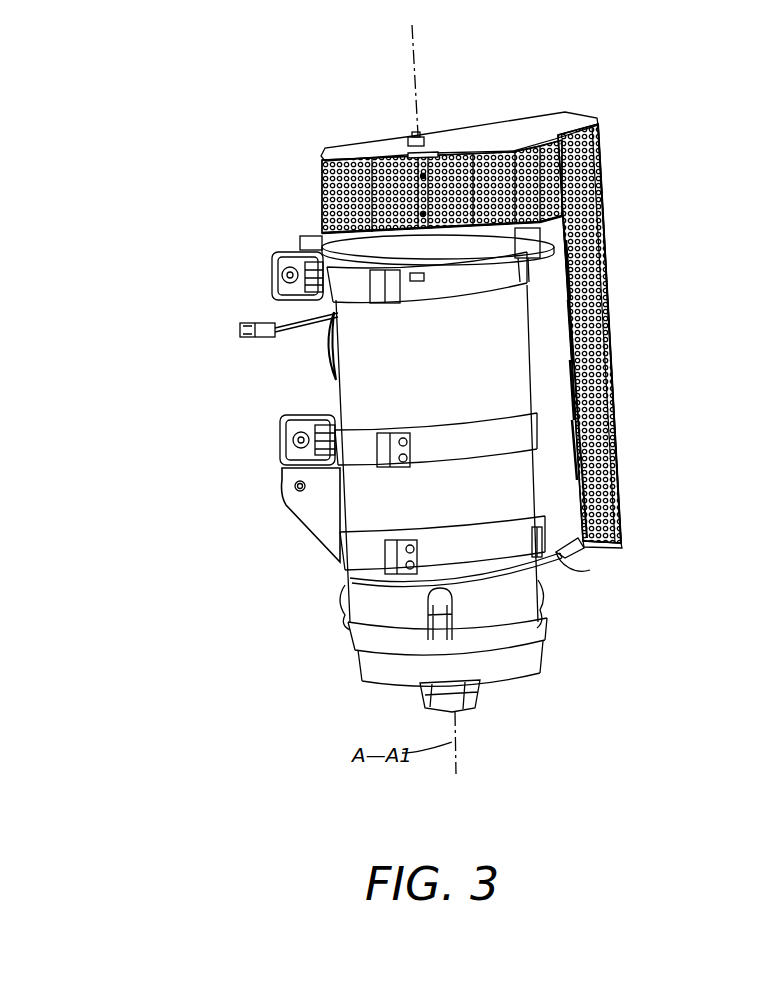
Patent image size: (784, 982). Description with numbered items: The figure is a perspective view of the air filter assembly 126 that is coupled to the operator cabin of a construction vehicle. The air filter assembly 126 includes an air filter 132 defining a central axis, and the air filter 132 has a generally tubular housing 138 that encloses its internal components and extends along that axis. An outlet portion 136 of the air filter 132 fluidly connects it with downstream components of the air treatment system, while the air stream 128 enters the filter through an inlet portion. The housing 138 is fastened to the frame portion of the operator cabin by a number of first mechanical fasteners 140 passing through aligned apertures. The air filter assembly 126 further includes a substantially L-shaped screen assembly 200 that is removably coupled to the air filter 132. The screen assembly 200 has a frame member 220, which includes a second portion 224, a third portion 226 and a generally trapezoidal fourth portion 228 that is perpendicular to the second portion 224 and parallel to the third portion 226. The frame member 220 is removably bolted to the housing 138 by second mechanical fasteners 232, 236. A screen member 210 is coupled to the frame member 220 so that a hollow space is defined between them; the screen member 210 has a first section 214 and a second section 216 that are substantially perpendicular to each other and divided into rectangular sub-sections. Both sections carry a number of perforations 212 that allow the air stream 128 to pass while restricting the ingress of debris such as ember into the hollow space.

The air filter assembly 126 is at (236, 109).
The first section 214 is at (318, 184).
The third portion 226 is at (512, 130).
The screen member 210 is at (606, 239).
The second section 216 is at (607, 276).
The perforations 212 is at (608, 334).
The air stream 128 is at (630, 444).
The screen assembly 200 is at (626, 483).
The fourth portion 228 is at (604, 540).
The second mechanical fastener 232 is at (330, 236).
The frame member 220 is at (563, 333).
The first mechanical fasteners 140 is at (272, 273).
The outlet portion 136 is at (314, 341).
The housing 138 is at (340, 347).
The air filter 132 is at (340, 498).
The second portion 224 is at (584, 548).
The second mechanical fastener 236 is at (563, 550).